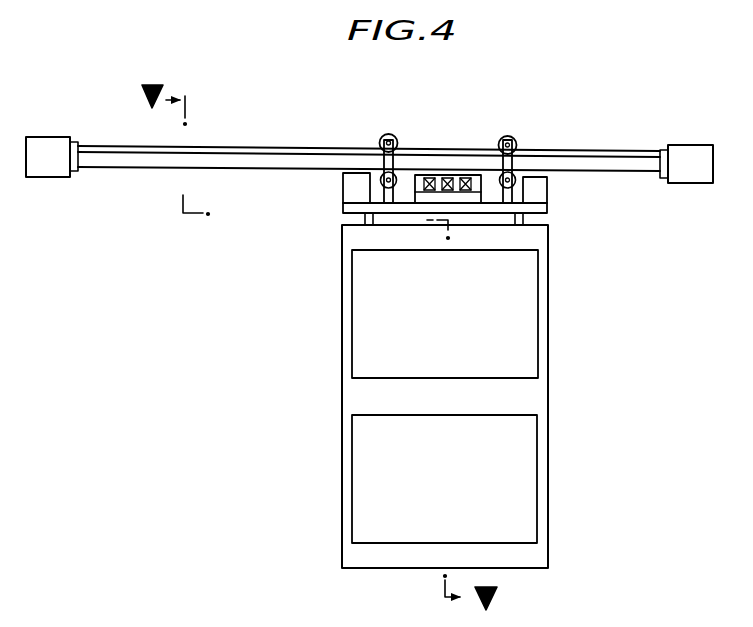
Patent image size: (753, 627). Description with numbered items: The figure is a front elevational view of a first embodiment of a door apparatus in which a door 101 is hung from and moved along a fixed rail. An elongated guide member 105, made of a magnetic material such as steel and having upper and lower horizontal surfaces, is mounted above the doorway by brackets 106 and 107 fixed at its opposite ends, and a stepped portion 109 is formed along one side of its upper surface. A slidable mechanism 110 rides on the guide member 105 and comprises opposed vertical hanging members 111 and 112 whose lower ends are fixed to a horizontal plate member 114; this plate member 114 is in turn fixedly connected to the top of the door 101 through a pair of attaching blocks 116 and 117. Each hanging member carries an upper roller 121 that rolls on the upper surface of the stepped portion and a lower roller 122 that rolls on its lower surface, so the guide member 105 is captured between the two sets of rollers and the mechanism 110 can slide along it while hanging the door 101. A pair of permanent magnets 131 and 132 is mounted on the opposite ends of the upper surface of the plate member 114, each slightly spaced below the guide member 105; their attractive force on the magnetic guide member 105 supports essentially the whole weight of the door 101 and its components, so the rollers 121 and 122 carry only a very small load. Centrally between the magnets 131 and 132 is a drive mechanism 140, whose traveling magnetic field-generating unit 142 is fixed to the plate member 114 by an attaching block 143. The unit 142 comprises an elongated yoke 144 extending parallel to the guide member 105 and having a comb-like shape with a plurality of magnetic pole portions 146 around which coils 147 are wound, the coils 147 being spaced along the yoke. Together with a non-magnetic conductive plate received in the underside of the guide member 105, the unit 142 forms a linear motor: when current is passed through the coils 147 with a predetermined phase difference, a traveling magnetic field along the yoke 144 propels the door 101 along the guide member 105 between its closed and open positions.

The door 101 is at (548, 393).
The elongated guide member 105 is at (240, 168).
The bracket 106 is at (60, 178).
The bracket 107 is at (688, 184).
The stepped portion 109 is at (282, 147).
The slidable mechanism 110 is at (530, 130).
The hanging member 111 is at (383, 165).
The hanging member 112 is at (514, 163).
The horizontal plate member 114 is at (548, 209).
The attaching block 116 is at (365, 220).
The attaching block 117 is at (522, 222).
The upper roller 121 is at (389, 134).
The lower roller 122 is at (381, 181).
The permanent magnet 131 is at (343, 188).
The permanent magnet 132 is at (548, 196).
The drive mechanism 140 is at (455, 195).
The traveling magnetic field-generating unit 142 is at (488, 170).
The attaching block 143 is at (416, 198).
The elongated yoke 144 is at (480, 200).
The magnetic pole portion 146 is at (421, 175).
The coil 147 is at (432, 192).